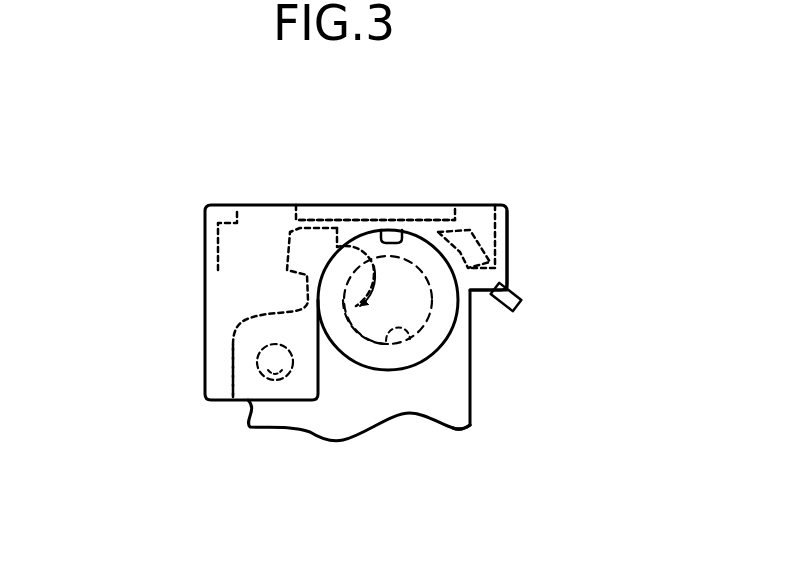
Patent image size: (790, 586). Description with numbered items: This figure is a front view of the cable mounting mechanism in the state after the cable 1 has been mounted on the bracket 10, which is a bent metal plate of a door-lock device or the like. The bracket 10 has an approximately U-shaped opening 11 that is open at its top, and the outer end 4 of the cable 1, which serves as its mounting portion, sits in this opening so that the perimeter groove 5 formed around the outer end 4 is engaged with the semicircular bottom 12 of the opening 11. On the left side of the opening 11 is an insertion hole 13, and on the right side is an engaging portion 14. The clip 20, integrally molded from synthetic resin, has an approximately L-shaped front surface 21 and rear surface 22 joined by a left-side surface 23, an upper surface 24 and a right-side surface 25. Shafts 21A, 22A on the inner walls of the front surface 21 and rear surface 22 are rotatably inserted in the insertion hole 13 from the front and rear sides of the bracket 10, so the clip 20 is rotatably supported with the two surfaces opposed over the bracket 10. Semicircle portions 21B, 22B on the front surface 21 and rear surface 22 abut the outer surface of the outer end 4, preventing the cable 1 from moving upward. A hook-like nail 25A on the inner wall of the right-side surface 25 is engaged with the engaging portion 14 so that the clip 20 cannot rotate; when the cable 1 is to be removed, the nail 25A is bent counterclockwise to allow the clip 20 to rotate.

The cable 1 is at (377, 386).
The outer end 4 is at (445, 340).
The perimeter groove 5 is at (350, 325).
The bracket 10 is at (514, 420).
The opening 11 is at (352, 214).
The bottom 12 is at (403, 345).
The insertion hole 13 is at (280, 381).
The engaging portion 14 is at (471, 228).
The clip 20 is at (173, 292).
The front surface 21 is at (361, 188).
The rear surface 22 is at (264, 230).
The shaft 21A is at (190, 376).
The shaft 22A is at (268, 352).
The semicircle portion 21B is at (376, 157).
The semicircle portion 22B is at (403, 228).
The left-side surface 23 is at (208, 225).
The upper surface 24 is at (432, 212).
The right-side surface 25 is at (507, 223).
The nail 25A is at (560, 280).